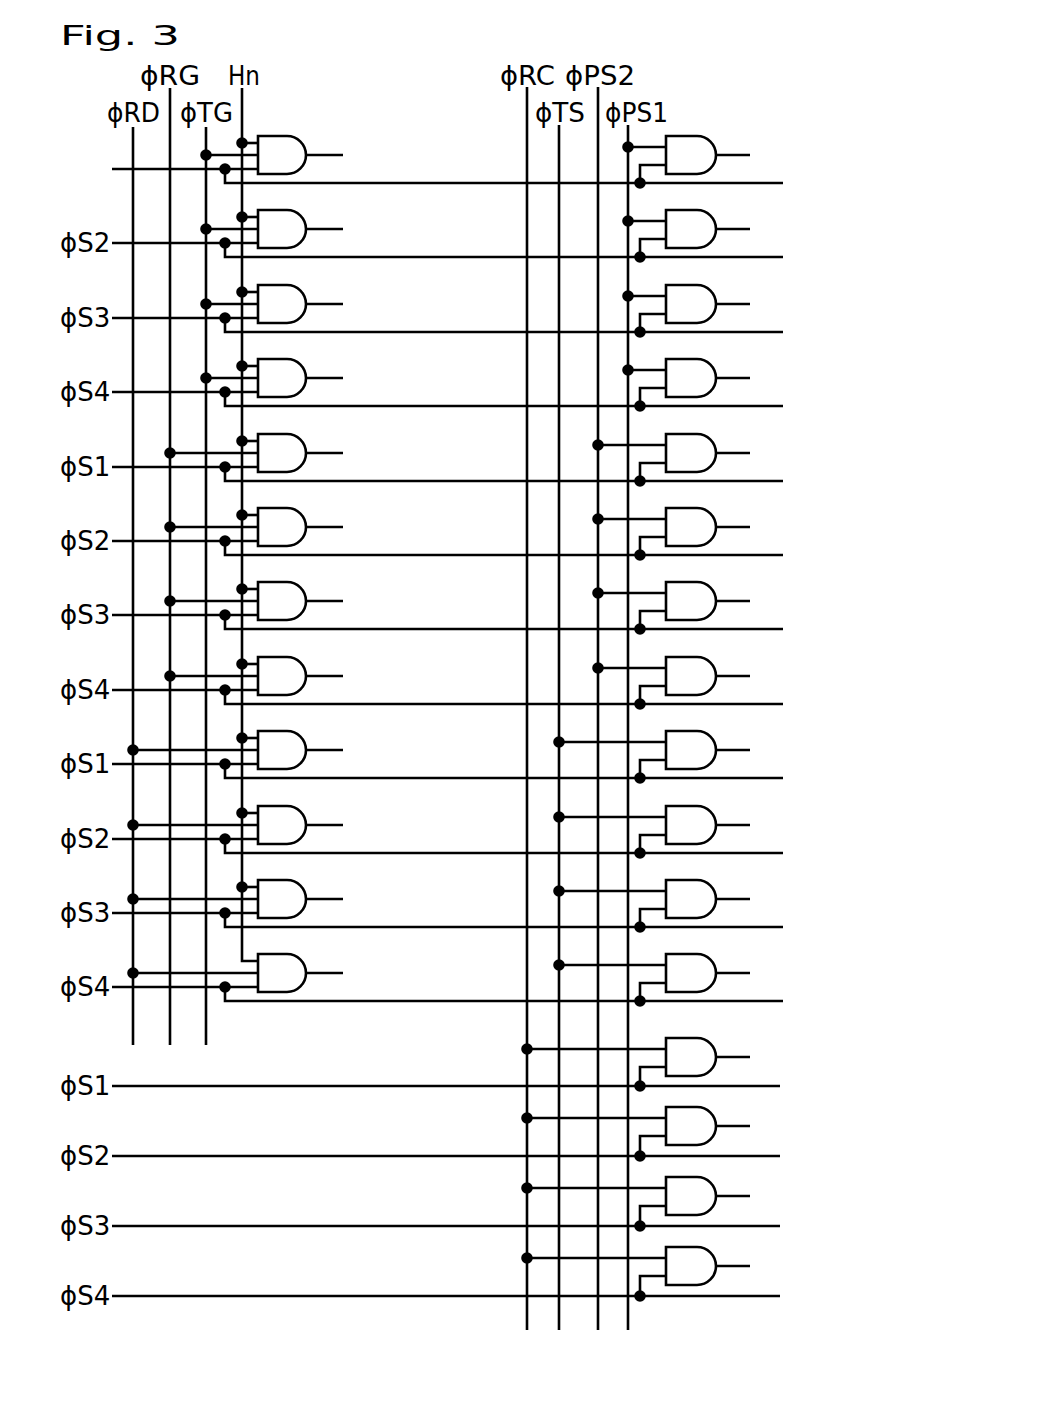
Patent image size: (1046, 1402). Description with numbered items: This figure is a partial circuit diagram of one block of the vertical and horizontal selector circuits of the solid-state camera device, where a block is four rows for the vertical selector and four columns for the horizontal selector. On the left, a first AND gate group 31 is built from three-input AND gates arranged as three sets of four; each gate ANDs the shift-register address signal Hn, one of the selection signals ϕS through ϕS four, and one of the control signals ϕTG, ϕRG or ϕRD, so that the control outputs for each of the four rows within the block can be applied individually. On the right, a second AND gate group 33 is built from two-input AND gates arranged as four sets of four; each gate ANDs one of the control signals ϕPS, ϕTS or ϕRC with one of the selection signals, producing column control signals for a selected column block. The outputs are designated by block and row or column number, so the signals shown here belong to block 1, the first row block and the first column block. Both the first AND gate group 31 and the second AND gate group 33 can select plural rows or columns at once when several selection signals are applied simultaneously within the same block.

The first AND gate group 31 is at (311, 92).
The second AND gate group 33 is at (717, 88).
The ϕS1 selection signal line 1 is at (421, 163).